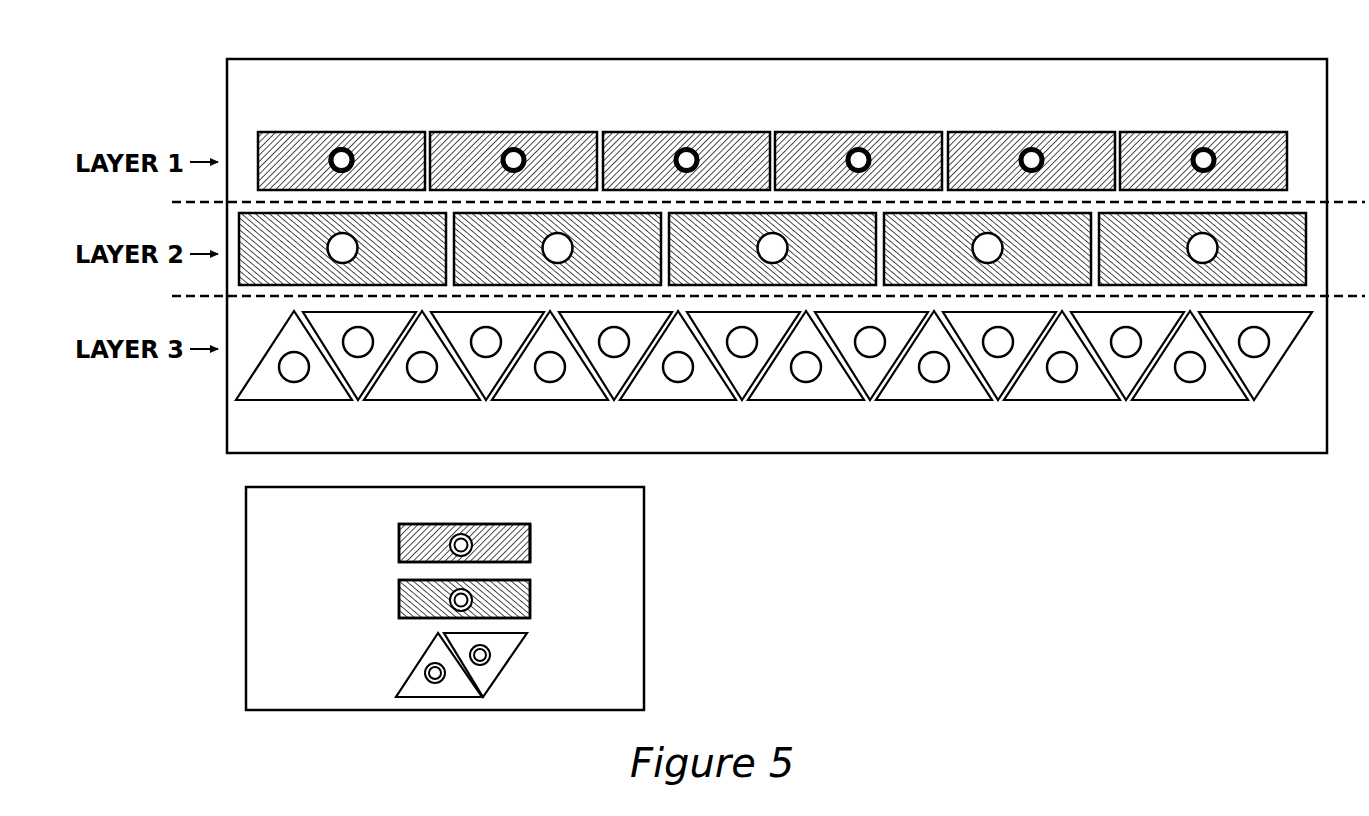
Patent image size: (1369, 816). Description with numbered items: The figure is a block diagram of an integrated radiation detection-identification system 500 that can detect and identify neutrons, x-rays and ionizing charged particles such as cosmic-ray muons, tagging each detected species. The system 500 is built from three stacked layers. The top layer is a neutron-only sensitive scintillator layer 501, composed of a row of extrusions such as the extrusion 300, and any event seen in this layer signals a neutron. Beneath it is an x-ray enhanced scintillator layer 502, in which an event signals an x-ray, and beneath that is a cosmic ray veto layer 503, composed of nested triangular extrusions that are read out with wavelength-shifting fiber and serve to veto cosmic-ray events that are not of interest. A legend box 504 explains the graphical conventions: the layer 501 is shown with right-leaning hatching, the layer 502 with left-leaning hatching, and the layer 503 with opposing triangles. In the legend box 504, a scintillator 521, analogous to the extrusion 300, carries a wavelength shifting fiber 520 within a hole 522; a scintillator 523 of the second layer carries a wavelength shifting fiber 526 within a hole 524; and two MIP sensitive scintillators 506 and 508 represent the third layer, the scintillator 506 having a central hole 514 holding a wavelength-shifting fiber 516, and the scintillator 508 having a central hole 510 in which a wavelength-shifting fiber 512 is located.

The extrusion 300 is at (316, 147).
The integrated radiation detection-identification system 500 is at (1268, 107).
The neutron-only sensitive scintillator layer 501 is at (244, 137).
The x-ray enhanced scintillator layer 502 is at (233, 231).
The cosmic ray veto layer 503 is at (249, 406).
The legend box 504 is at (615, 528).
The MIP sensitive scintillator 506 is at (428, 698).
The MIP sensitive scintillator 508 is at (499, 677).
The central hole 510 is at (492, 653).
The wavelength-shifting fiber 512 is at (503, 662).
The central hole 514 is at (421, 683).
The ring around hole 514 516 is at (445, 686).
The wavelength shifting fiber 520 is at (475, 538).
The scintillator 521 is at (530, 542).
The hole 522 is at (457, 533).
The scintillator 523 is at (530, 603).
The hole 524 is at (472, 598).
The ring around hole 524 526 is at (455, 612).